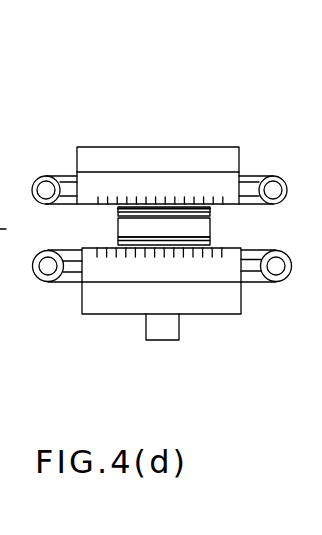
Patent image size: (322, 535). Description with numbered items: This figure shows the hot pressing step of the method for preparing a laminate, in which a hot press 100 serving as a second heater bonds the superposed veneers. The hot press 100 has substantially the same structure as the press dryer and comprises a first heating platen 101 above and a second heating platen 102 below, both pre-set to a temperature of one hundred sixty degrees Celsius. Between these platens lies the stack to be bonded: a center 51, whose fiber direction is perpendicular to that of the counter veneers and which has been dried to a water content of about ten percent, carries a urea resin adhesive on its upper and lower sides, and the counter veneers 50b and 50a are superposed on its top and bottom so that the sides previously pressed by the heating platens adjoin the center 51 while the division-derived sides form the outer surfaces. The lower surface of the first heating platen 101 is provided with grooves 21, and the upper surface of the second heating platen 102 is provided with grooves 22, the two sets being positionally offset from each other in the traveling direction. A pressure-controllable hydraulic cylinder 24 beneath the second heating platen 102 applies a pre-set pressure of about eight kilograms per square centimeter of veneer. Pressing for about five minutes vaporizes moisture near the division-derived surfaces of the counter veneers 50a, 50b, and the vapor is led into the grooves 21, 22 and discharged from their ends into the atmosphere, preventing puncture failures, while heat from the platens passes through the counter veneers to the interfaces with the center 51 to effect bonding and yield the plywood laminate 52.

The hot press 100 is at (155, 141).
The first heating platen 101 is at (225, 180).
The second heating platen 102 is at (230, 272).
The counter veneer 50b is at (129, 207).
The counter veneer 50a is at (131, 244).
The grooves 21 is at (173, 218).
The grooves 22 is at (153, 252).
The hydraulic cylinder 24 is at (169, 328).
The center 51 is at (197, 225).
The plywood (laminate) 52 is at (228, 207).